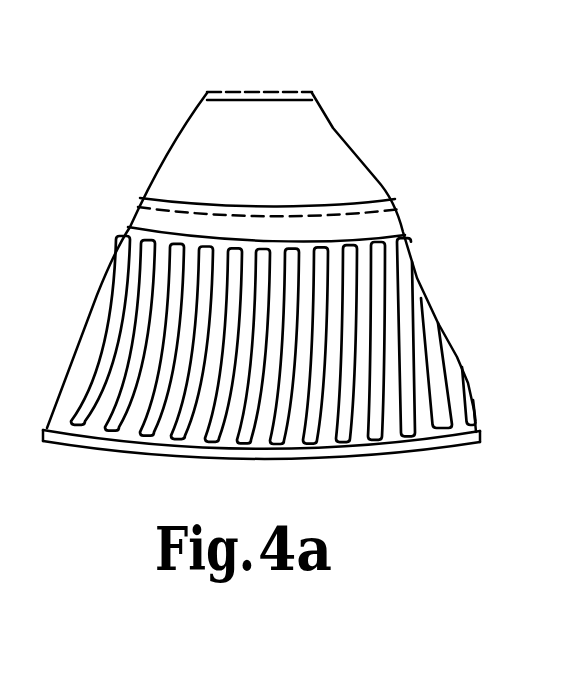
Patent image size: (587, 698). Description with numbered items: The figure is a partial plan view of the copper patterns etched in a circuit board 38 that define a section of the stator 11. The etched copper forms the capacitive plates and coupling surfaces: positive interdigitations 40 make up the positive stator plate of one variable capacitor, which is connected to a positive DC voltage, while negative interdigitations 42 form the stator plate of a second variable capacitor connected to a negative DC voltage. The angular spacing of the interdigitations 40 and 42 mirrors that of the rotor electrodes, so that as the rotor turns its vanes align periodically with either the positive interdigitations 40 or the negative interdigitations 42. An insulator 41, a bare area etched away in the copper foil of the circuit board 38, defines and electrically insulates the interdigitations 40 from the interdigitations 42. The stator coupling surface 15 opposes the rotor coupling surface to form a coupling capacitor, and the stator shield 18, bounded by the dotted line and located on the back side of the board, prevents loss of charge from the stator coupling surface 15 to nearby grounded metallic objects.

The stator 11 is at (297, 80).
The stator coupling surface 15 is at (174, 158).
The stator shield 18 is at (302, 89).
The circuit board 38 is at (426, 450).
The positive interdigitations 40 is at (128, 293).
The insulator 41 is at (392, 280).
The negative interdigitations 42 is at (260, 370).